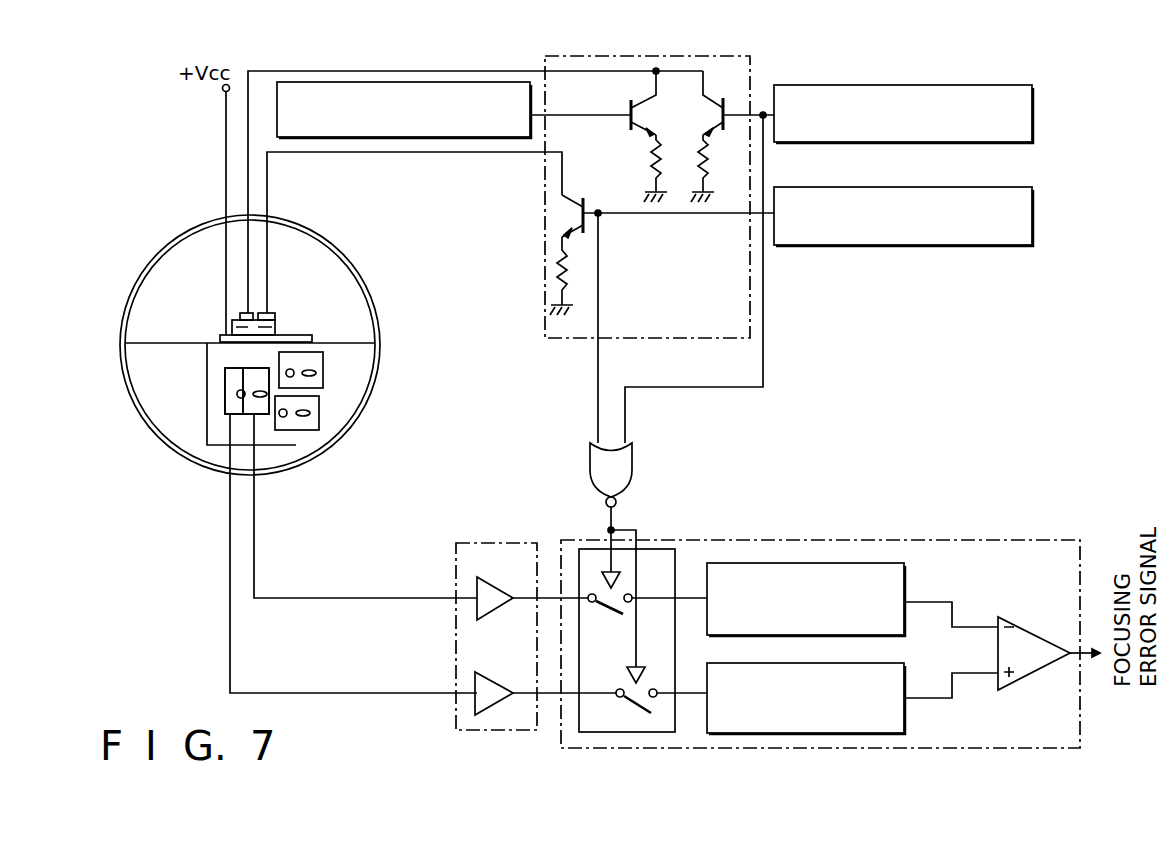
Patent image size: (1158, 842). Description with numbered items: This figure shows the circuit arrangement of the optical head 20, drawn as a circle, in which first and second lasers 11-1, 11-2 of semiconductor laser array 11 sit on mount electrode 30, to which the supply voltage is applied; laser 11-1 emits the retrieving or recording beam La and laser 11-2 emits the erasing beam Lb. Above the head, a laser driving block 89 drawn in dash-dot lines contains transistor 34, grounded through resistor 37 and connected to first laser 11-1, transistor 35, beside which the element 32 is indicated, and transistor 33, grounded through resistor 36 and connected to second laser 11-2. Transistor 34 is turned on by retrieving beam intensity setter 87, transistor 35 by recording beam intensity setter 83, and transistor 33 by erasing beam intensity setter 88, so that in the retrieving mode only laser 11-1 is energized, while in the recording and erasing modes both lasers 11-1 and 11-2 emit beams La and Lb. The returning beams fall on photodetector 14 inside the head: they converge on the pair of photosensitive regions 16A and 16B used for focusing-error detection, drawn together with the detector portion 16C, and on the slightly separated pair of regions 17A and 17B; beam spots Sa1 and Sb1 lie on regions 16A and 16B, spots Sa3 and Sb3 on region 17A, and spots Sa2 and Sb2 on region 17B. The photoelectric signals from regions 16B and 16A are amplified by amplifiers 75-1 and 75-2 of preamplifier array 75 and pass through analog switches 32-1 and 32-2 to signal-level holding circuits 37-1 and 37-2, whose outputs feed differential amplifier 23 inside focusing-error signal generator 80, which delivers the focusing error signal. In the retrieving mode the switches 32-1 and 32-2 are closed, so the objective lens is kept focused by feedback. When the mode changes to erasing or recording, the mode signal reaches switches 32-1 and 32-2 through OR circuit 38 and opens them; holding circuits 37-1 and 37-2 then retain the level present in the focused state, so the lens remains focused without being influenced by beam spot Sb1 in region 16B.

The semiconductor laser array 11 is at (254, 320).
The first laser 11-1 is at (240, 318).
The second laser 11-2 is at (272, 318).
The photodetector 14 is at (207, 432).
The photosensitive region 16A is at (225, 405).
The photosensitive region 16B is at (250, 406).
The photodetector 16C is at (240, 375).
The photosensitive region 17A is at (323, 357).
The photosensitive region 17B is at (283, 431).
The optical head 20 is at (377, 304).
The differential amplifier 23 is at (1040, 633).
The mount electrode 30 is at (220, 338).
The laser drive transistor pair 32 is at (722, 99).
The analog switch 32-1 is at (636, 583).
The analog switch 32-2 is at (637, 714).
The transistor 33 is at (598, 240).
The transistor 34 is at (630, 124).
The transistor 35 is at (718, 168).
The resistor 36 is at (575, 276).
The resistor 37 is at (648, 166).
The signal-level holding circuit 37-1 is at (905, 578).
The signal-level holding circuit 37-2 is at (905, 716).
The OR circuit 38 is at (633, 456).
The preamplifier array 75 is at (460, 712).
The amplifier 75-1 is at (496, 578).
The amplifier 75-2 is at (496, 674).
The focusing-error signal generator 80 is at (1080, 725).
The recording beam intensity setter 83 is at (1033, 110).
The retrieving beam intensity setter 87 is at (444, 138).
The erasing beam intensity setter 88 is at (1033, 217).
The laser driving circuit 89 is at (687, 55).
The light spot Sa1 is at (237, 392).
The light spot Sa2 is at (285, 418).
The light spot Sa3 is at (291, 369).
The beam spot Sb1 is at (259, 391).
The light spot Sb2 is at (319, 426).
The light spot Sb3 is at (323, 383).